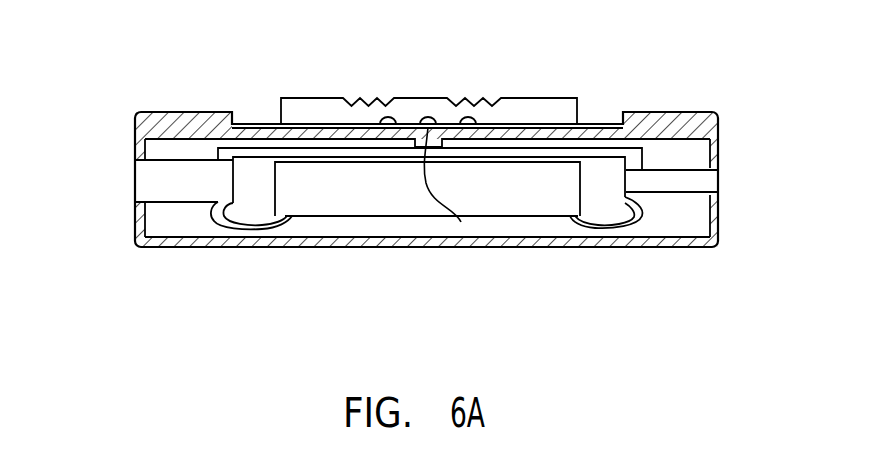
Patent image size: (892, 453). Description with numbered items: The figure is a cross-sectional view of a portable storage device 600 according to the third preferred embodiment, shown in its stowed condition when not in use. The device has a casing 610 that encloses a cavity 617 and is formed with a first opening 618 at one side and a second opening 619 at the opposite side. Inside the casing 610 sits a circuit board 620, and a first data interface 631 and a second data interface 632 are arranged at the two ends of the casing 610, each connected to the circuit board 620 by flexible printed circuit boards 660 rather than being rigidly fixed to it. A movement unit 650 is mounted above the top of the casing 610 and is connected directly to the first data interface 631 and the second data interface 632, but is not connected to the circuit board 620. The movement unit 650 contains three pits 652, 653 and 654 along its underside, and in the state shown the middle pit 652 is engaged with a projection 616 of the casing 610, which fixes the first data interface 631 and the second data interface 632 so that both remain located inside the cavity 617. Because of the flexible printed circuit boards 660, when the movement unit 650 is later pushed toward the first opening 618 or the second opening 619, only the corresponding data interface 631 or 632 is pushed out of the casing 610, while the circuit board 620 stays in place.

The portable storage device 600 is at (80, 332).
The casing 610 is at (670, 122).
The projection 616 is at (461, 222).
The cavity 617 is at (675, 222).
The first opening 618 is at (133, 161).
The second opening 619 is at (720, 177).
The circuit board 620 is at (368, 195).
The first data interface 631 is at (150, 184).
The second data interface 632 is at (718, 192).
The movement unit 650 is at (562, 97).
The pit 652 is at (428, 97).
The pit 653 is at (388, 97).
The pit 654 is at (468, 97).
The flexible printed circuit boards 660 is at (238, 229).